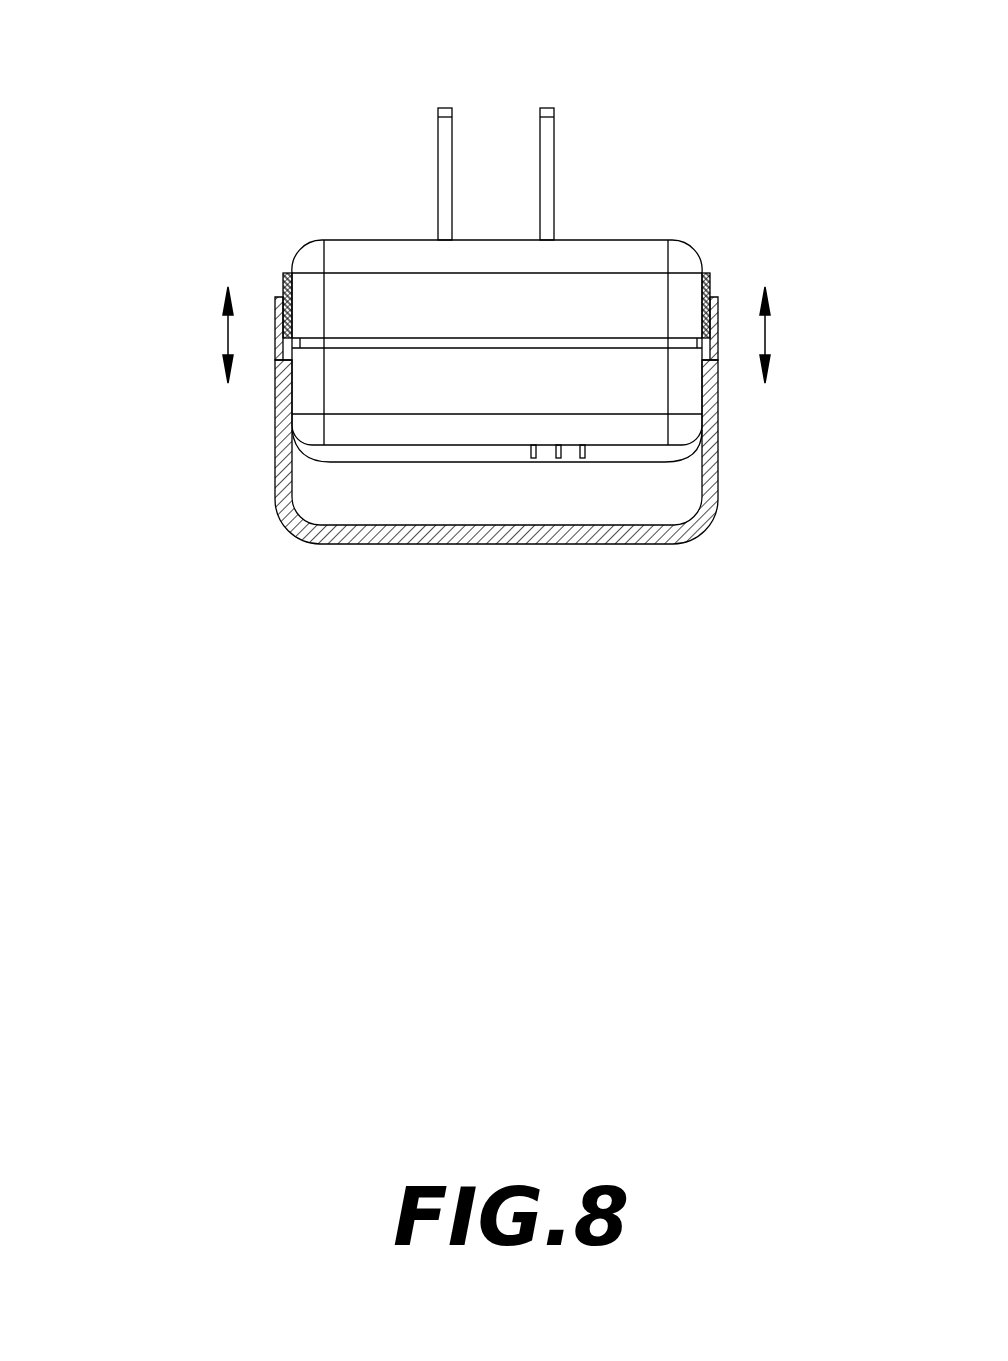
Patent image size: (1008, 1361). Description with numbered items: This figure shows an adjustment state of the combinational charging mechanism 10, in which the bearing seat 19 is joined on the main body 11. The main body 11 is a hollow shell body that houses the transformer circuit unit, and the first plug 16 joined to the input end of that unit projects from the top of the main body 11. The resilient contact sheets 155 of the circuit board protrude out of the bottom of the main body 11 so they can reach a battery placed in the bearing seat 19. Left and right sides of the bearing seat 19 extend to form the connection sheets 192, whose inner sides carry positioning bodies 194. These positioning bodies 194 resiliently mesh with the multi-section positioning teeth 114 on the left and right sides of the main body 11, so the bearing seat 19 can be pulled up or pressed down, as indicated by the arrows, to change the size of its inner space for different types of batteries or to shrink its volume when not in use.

The combinational charging mechanism 10 is at (180, 150).
The main body 11 is at (366, 210).
The first plug 16 is at (548, 140).
The bearing seat 19 is at (583, 454).
The connection sheets 192 is at (718, 404).
The positioning bodies 194 is at (715, 297).
The multi-section positioning teeth 114 is at (708, 278).
The resilient contact sheets 155 is at (558, 458).